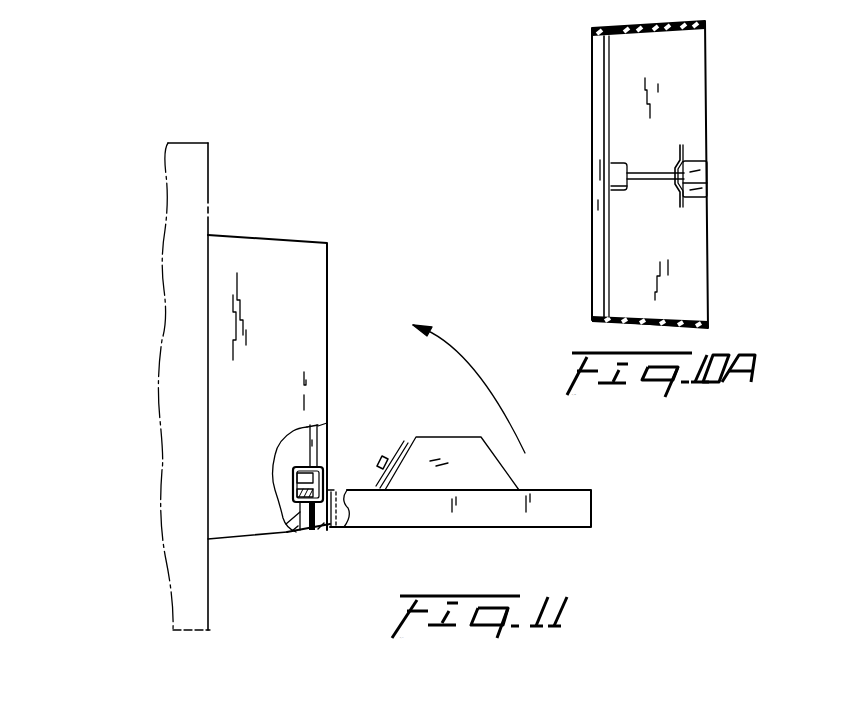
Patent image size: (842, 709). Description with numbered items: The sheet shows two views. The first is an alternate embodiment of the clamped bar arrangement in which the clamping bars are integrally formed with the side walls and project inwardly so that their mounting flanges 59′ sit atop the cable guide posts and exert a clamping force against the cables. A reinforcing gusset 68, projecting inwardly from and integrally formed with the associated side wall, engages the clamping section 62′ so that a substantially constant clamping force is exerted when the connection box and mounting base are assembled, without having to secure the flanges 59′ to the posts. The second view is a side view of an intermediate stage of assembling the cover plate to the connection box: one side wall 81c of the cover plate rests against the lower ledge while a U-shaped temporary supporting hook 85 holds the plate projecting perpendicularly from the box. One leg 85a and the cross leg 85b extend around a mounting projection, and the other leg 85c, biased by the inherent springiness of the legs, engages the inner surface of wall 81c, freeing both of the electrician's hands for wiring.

In FIG. 10A, the mounting flange 59′ is at (680, 145).
In FIG. 10A, the clamping section 62′ is at (707, 182).
In FIG. 10A, the reinforcing gusset 68 is at (648, 183).
In FIG. 11, the temporary supporting hook 85 is at (322, 468).
In FIG. 11, the leg 85a is at (295, 478).
In FIG. 11, the cross leg 85b is at (292, 442).
In FIG. 11, the leg 85c is at (356, 492).
In FIG. 11, the side wall 81c is at (300, 530).